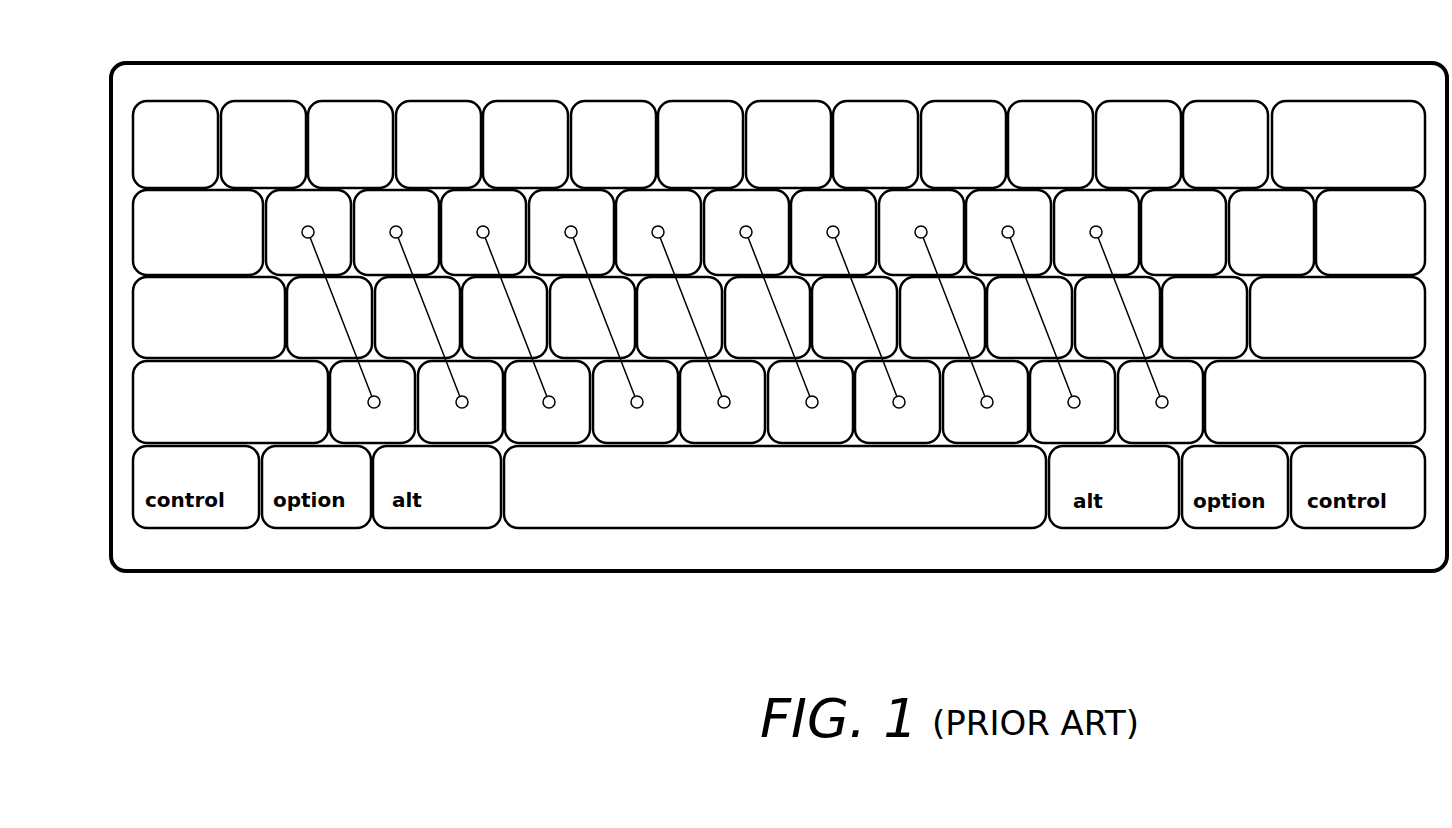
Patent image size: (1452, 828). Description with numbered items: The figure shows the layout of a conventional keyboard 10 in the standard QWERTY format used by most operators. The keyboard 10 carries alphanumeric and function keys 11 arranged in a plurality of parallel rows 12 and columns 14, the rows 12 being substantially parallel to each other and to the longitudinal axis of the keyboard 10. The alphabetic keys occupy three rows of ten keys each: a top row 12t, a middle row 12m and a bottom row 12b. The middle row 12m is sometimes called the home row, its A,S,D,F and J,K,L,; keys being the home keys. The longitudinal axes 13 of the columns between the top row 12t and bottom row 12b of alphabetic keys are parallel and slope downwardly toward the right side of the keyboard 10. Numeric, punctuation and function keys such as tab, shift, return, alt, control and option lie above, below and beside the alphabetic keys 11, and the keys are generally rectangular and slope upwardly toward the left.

The conventional keyboard 10 is at (788, 63).
The alphanumeric and function keys 11 is at (947, 102).
The rows 12 is at (741, 94).
The top row 12t is at (122, 231).
The middle row 12m is at (112, 318).
The bottom row 12b is at (112, 410).
The longitudinal axes of the columns 13 is at (658, 232).
The columns 14 is at (423, 101).